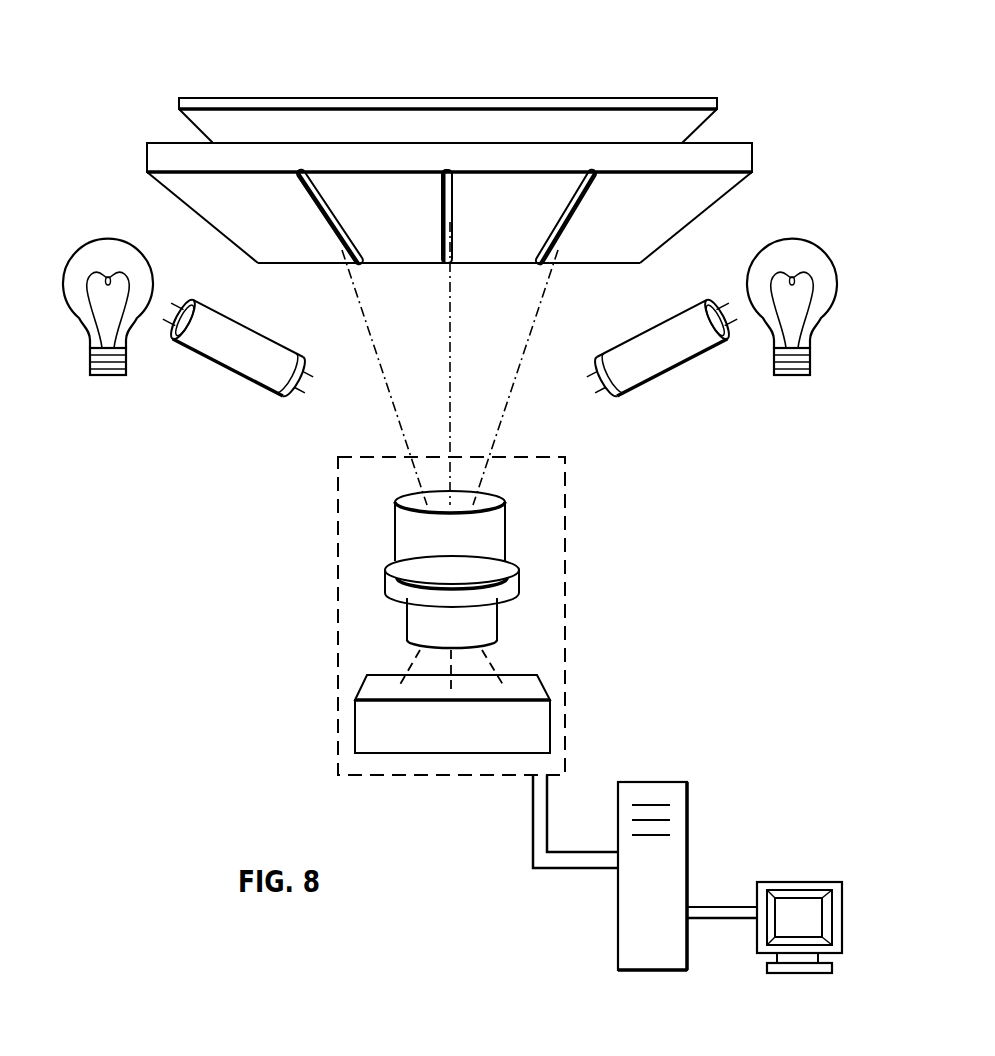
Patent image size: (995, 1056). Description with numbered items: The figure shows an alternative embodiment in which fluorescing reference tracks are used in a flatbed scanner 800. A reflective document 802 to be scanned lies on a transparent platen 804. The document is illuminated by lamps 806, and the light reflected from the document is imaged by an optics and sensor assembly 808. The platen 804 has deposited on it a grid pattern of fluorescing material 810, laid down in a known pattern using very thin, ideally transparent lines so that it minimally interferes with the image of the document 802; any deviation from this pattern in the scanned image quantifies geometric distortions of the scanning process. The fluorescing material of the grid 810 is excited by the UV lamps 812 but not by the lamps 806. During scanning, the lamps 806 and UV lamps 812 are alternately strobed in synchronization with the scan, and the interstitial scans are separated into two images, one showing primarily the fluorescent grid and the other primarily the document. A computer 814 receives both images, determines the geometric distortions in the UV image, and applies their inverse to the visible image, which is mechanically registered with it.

The flatbed scanner 800 is at (641, 73).
The reflective document 802 is at (540, 97).
The transparent platen 804 is at (737, 148).
The lamps 806 is at (72, 313).
The optics and sensor assembly 808 is at (567, 634).
The grid pattern of fluorescing material 810 is at (350, 233).
The UV lamps 812 is at (217, 370).
The computer 814 is at (742, 864).